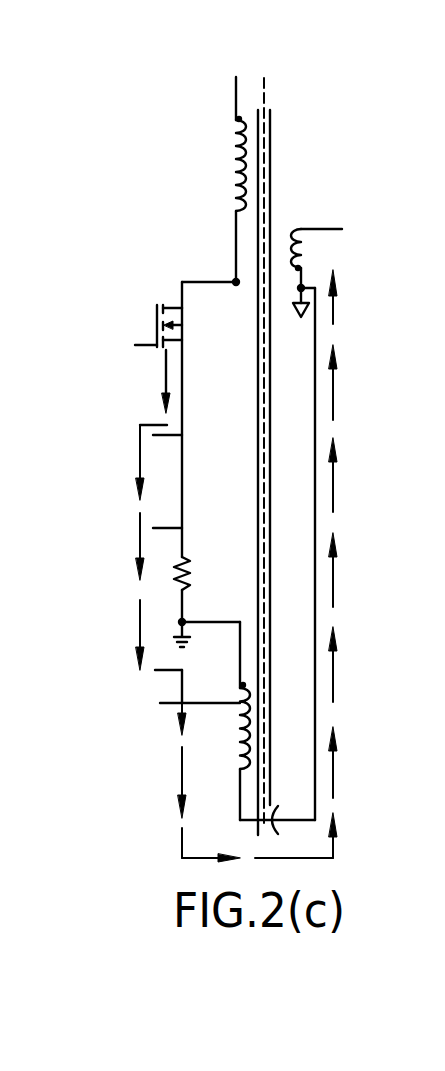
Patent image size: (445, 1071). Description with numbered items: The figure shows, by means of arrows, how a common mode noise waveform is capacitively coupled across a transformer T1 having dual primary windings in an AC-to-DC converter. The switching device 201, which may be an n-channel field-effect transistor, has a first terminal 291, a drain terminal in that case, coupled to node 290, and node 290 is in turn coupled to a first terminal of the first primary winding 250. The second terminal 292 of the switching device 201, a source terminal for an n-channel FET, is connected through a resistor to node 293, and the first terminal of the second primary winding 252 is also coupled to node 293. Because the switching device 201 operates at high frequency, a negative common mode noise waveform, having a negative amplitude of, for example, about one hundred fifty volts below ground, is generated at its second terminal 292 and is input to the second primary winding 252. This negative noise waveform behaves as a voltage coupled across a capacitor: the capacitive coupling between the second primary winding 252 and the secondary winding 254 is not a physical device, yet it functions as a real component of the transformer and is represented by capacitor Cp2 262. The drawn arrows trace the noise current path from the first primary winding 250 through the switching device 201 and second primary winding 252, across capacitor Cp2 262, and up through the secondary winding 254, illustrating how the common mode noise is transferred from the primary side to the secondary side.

The transformer T1 is at (278, 456).
The first primary winding 250 is at (236, 138).
The node 290 is at (236, 282).
The first terminal 291 is at (180, 308).
The switching device 201 is at (157, 323).
The second terminal 292 is at (178, 341).
The node 293 is at (182, 622).
The second primary winding 252 is at (240, 760).
The secondary winding 254 is at (300, 250).
The capacitor Cp2 262 is at (270, 813).